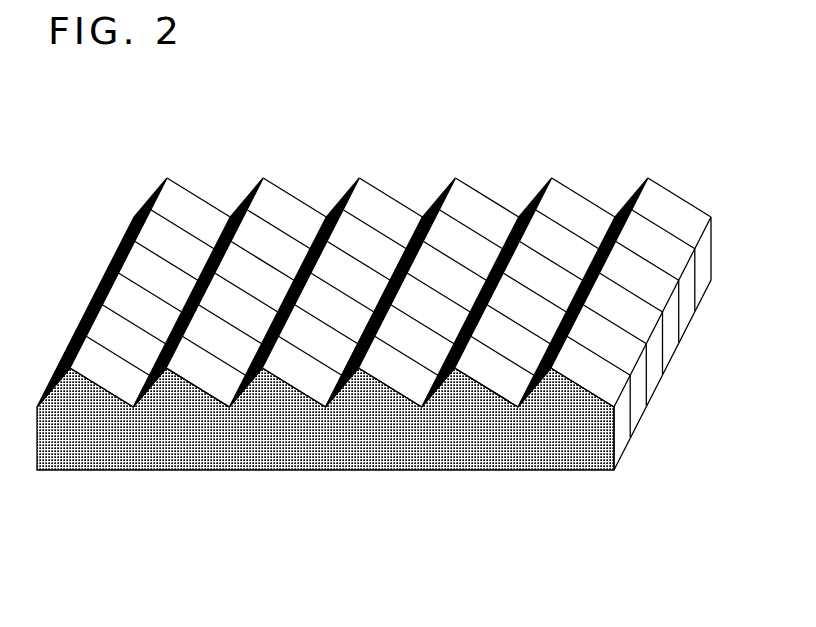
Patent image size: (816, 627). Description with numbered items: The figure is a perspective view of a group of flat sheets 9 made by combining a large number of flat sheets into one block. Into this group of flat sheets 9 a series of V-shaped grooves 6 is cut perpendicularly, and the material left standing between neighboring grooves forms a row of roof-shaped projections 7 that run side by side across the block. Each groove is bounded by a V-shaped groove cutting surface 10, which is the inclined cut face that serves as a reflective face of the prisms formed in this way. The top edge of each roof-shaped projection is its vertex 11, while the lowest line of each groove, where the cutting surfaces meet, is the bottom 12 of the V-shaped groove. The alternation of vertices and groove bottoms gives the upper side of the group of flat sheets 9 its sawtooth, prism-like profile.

The V-shaped groove 6 is at (324, 191).
The roof-shaped projection 7 is at (457, 172).
The group of flat sheets 9 is at (629, 484).
The V-shaped groove cutting surface 10 is at (575, 213).
The vertex of roof-shaped projection 11 is at (169, 375).
The bottom of V-shaped groove 12 is at (329, 412).